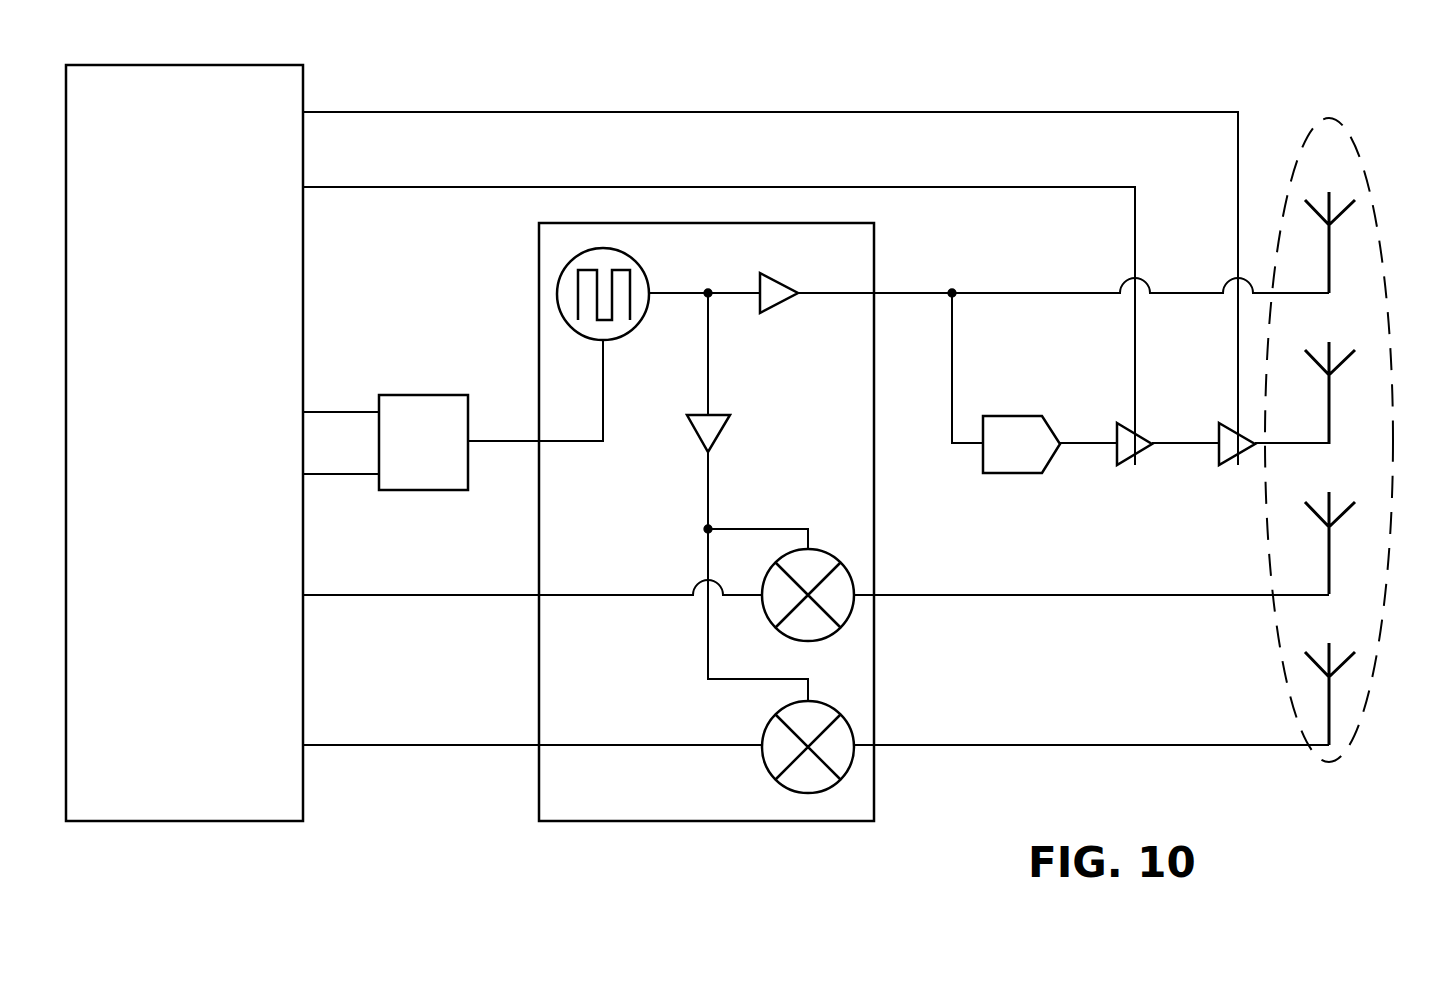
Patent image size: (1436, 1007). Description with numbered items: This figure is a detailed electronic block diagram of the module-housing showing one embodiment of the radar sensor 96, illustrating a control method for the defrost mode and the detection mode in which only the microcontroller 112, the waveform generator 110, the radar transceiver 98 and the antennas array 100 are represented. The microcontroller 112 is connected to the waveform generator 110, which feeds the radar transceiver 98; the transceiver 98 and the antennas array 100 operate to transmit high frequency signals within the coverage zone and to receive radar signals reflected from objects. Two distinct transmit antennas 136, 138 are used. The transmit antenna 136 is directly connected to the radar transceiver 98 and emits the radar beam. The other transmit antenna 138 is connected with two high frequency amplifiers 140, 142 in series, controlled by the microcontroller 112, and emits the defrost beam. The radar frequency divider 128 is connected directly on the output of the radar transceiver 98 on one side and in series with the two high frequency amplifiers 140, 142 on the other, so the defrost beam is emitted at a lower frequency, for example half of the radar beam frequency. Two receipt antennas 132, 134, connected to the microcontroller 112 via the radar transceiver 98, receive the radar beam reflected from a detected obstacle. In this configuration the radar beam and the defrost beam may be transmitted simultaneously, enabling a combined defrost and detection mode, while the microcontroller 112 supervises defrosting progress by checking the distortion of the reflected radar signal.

The radar sensor 96 is at (590, 75).
The radar transceiver 98 is at (587, 823).
The antennas array 100 is at (1310, 138).
The waveform generator 110 is at (446, 455).
The microcontroller 112 is at (208, 469).
The radar frequency divider 128 is at (982, 458).
The receipt antenna 132 is at (1332, 557).
The receipt antenna 134 is at (1332, 703).
The transmit antenna 136 is at (1332, 247).
The transmit antenna 138 is at (1330, 408).
The high frequency amplifier 140 is at (1217, 457).
The high frequency amplifier 142 is at (1115, 457).